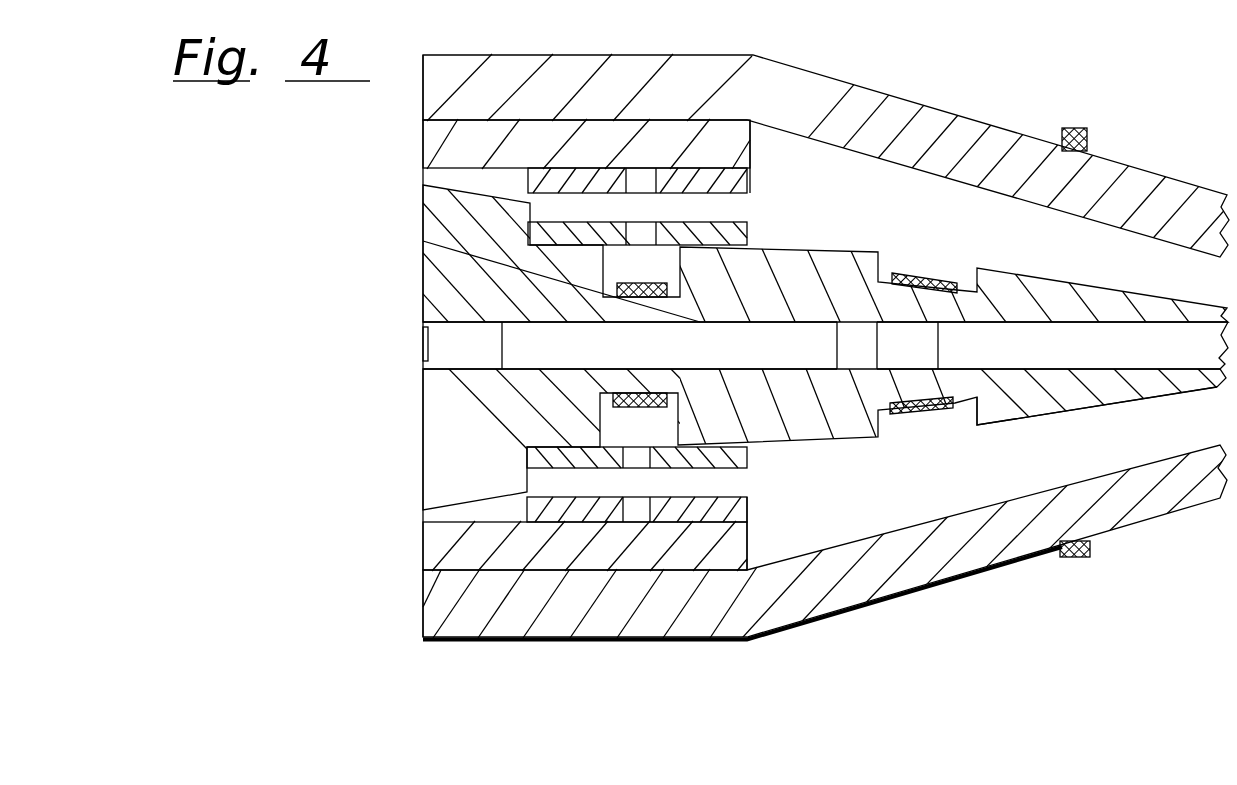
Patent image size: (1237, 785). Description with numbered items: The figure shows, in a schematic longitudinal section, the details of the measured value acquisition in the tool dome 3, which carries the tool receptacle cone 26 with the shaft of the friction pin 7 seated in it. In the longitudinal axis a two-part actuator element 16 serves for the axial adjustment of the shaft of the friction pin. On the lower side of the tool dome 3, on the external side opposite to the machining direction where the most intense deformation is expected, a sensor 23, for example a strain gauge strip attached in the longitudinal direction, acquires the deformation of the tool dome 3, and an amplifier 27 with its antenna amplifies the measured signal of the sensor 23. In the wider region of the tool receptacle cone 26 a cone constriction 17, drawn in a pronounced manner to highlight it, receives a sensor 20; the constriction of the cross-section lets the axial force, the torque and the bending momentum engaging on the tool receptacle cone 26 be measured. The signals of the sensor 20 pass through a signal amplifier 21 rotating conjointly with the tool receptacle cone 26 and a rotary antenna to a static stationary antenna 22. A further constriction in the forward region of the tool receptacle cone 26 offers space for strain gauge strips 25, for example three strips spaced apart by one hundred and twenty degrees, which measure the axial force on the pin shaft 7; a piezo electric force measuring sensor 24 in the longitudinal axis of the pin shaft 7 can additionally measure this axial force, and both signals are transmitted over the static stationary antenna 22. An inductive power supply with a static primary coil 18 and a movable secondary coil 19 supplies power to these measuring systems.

The tool dome 3 is at (900, 553).
The shaft of the friction pin 7 is at (1170, 350).
The two-part actuator element 16 is at (753, 342).
The cone constriction 17 is at (600, 412).
The static primary coil 18 is at (538, 497).
The movable secondary coil 19 is at (578, 455).
The sensor 20 is at (637, 322).
The signal amplifier 21 is at (673, 450).
The static stationary antenna 22 is at (710, 503).
The sensor 23 is at (797, 628).
The piezo electric force measuring sensor 24 is at (910, 353).
The strain gauge strips 25 is at (957, 293).
The tool receptacle cone 26 is at (1030, 393).
The amplifier 27 is at (1083, 557).